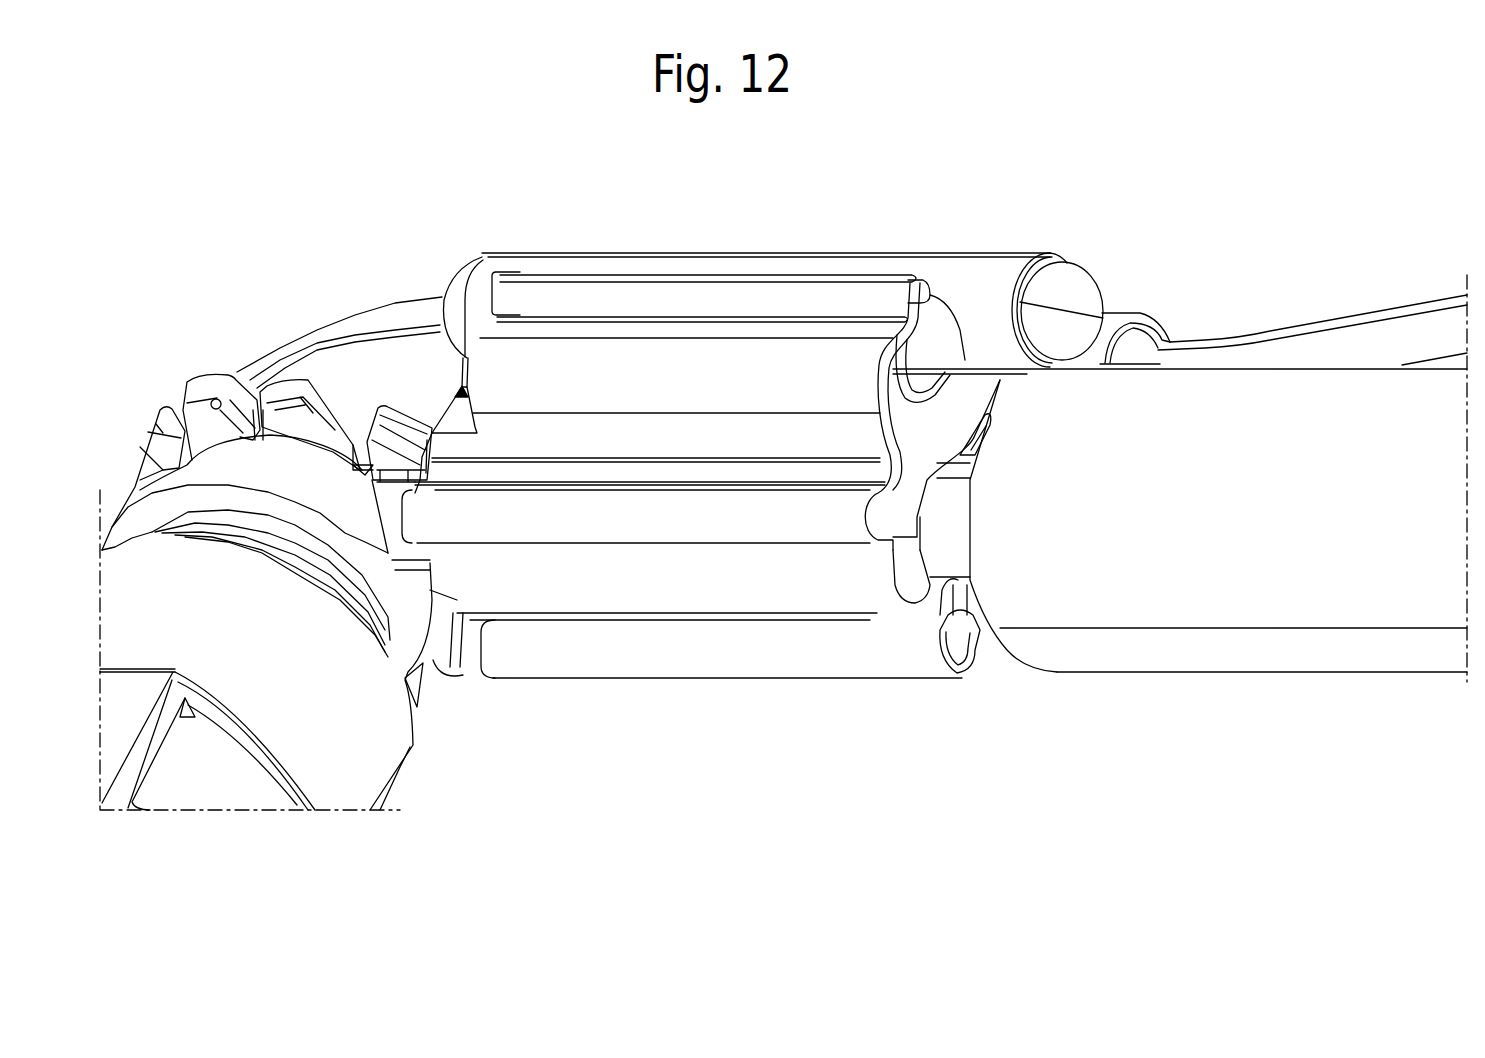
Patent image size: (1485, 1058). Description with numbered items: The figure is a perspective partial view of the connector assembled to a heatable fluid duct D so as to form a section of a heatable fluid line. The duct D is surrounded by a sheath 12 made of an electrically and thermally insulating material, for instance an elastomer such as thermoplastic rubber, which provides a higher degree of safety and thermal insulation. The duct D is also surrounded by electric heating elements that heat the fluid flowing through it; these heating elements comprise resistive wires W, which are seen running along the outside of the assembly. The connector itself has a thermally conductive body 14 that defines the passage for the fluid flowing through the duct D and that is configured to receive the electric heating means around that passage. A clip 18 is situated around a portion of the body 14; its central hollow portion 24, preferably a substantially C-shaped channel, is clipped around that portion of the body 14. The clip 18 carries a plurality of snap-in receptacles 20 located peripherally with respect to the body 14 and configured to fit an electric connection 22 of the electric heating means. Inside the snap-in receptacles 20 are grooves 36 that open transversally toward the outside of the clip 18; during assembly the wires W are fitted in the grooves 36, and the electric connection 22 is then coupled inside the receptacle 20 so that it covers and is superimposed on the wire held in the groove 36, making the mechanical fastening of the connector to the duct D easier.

The sheath 12 is at (1200, 653).
The thermally conductive body 14 is at (403, 770).
The clip 18 is at (953, 678).
The snap-in receptacles 20 is at (920, 285).
The electric connection 22 is at (968, 290).
The central hollow portion 24 is at (917, 445).
The grooves 36 is at (926, 303).
The resistive wires W is at (333, 326).
The heatable fluid duct D is at (1103, 675).